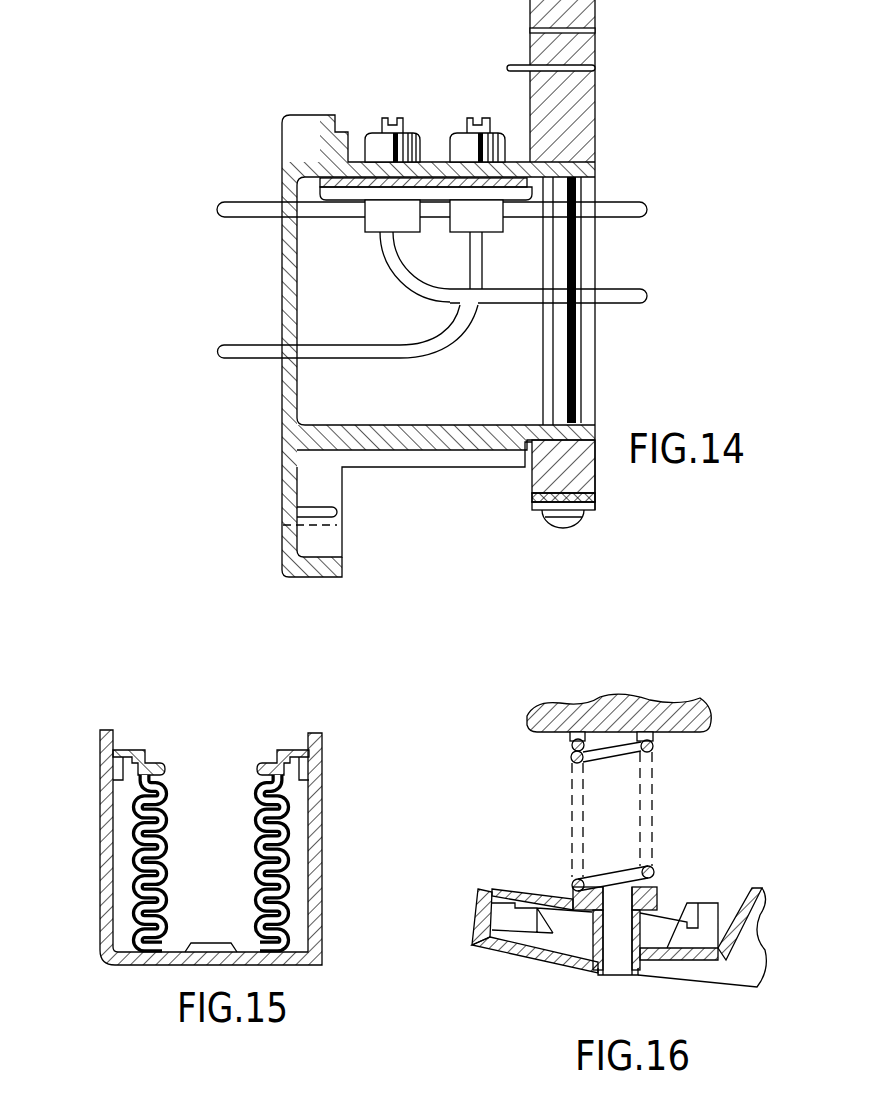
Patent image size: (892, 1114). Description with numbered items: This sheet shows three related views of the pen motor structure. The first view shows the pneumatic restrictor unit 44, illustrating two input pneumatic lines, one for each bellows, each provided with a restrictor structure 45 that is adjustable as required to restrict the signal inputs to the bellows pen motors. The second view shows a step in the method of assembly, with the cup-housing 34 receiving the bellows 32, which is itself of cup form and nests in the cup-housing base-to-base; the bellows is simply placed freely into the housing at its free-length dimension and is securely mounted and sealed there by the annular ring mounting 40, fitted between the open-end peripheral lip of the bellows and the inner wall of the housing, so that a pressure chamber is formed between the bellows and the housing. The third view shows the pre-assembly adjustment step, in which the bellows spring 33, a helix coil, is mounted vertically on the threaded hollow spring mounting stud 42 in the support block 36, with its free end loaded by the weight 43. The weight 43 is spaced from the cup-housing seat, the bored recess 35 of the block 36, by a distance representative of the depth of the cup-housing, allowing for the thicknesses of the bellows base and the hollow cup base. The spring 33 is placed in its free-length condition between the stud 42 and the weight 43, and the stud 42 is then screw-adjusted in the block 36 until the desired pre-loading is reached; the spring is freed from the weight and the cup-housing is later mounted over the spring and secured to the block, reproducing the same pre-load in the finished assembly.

In FIG. 14, the pneumatic restrictor unit 44 is at (282, 280).
In FIG. 14, the restrictor structure 45 is at (373, 136).
In FIG. 15, the annular ring mounting 40 is at (117, 752).
In FIG. 15, the bellows 32 is at (133, 798).
In FIG. 15, the cup-housing 34 is at (102, 845).
In FIG. 16, the weight 43 is at (550, 712).
In FIG. 16, the bellows spring 33 is at (570, 757).
In FIG. 16, the bored recess 35 is at (541, 935).
In FIG. 16, the spring mounting stud 42 is at (618, 957).
In FIG. 16, the support block 36 is at (753, 943).